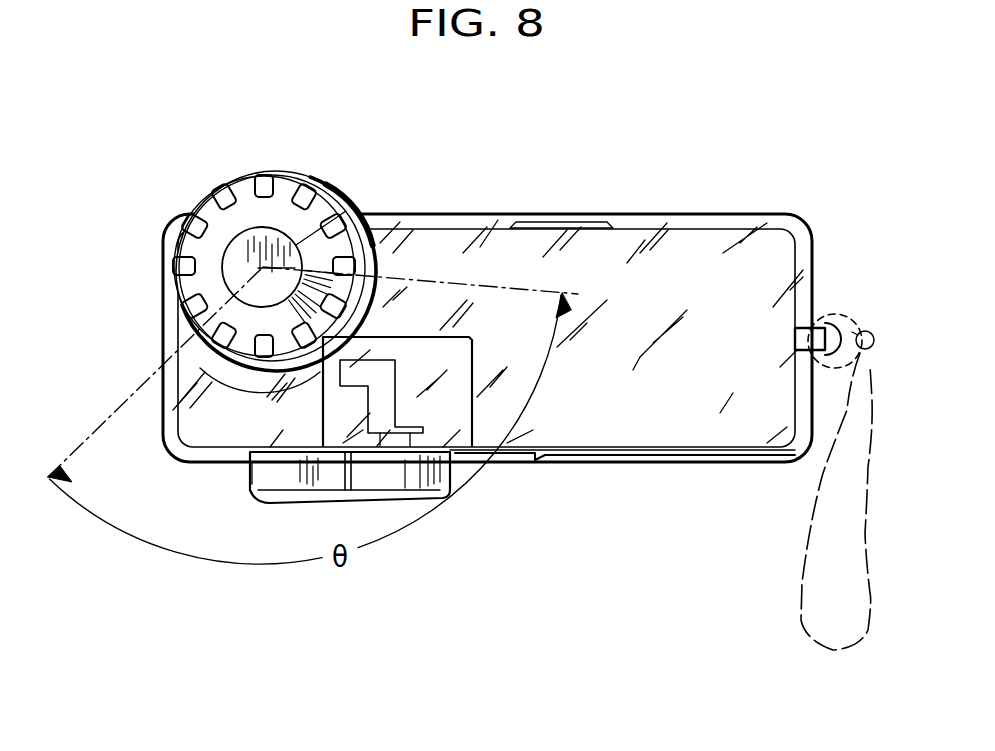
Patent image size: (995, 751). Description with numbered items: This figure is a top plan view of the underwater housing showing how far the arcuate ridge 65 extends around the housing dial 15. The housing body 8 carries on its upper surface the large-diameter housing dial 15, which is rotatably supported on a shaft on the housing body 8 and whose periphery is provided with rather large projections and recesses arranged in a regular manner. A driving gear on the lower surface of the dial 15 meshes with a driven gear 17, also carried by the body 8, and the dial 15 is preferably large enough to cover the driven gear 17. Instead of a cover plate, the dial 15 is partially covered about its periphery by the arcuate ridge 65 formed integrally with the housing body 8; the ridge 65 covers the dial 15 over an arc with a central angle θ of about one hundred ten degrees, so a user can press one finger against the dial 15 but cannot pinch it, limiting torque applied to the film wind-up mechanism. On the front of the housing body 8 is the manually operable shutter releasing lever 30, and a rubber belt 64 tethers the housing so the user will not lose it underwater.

The housing body 8 is at (682, 248).
The housing dial 15 is at (284, 178).
The driven gear 17 is at (360, 178).
The arcuate ridge 65 is at (247, 366).
The shutter releasing lever 30 is at (250, 487).
The rubber belt 64 is at (800, 632).